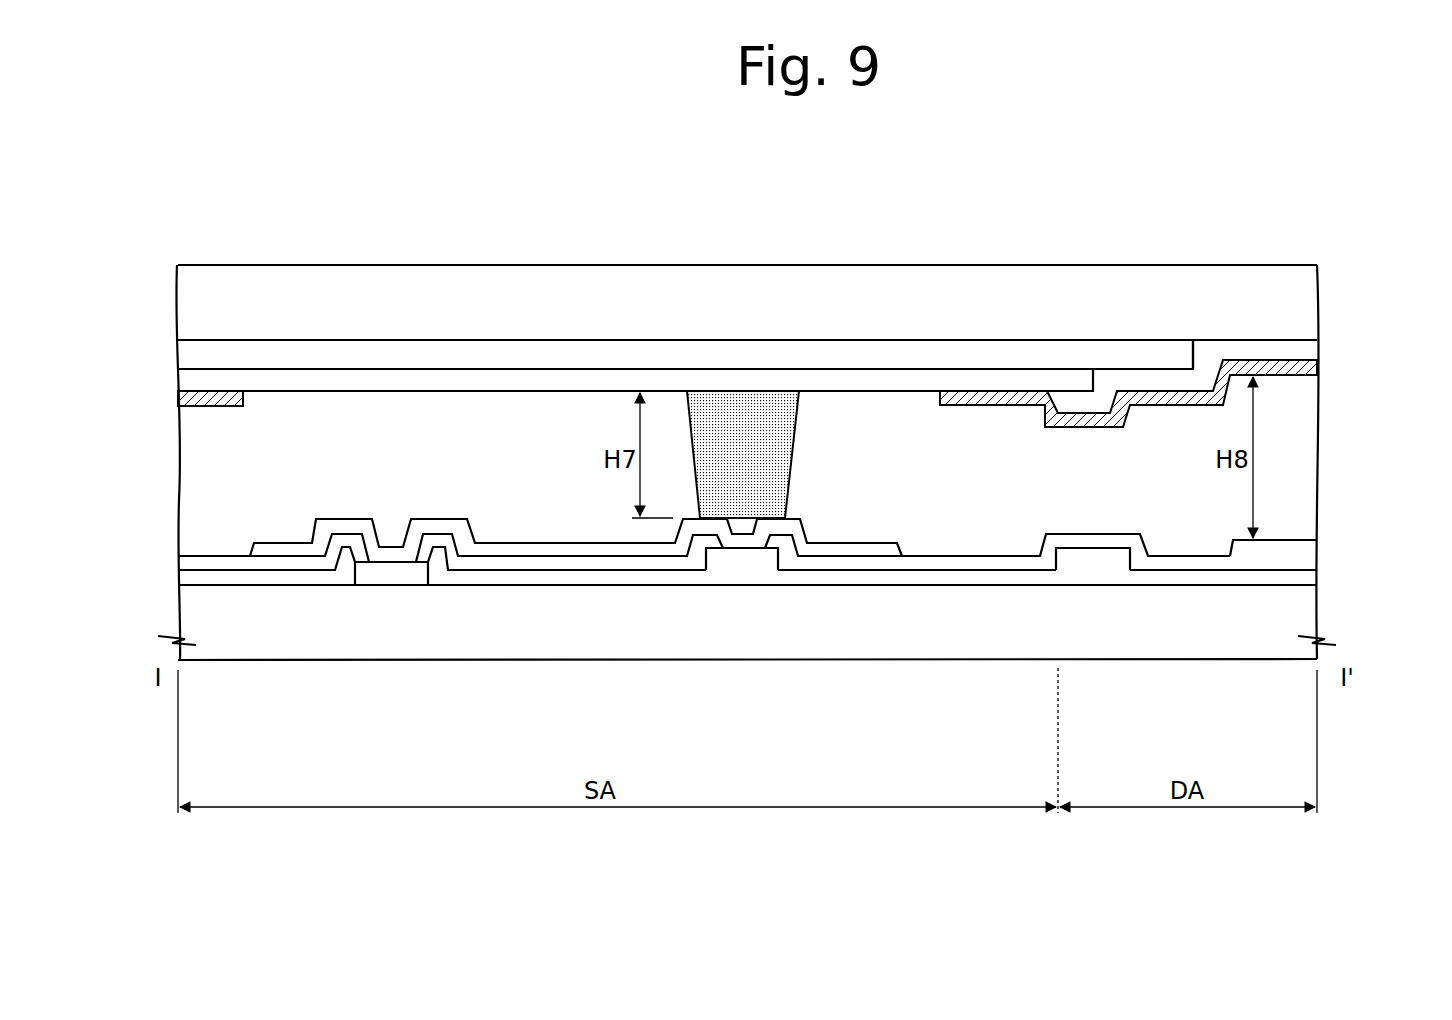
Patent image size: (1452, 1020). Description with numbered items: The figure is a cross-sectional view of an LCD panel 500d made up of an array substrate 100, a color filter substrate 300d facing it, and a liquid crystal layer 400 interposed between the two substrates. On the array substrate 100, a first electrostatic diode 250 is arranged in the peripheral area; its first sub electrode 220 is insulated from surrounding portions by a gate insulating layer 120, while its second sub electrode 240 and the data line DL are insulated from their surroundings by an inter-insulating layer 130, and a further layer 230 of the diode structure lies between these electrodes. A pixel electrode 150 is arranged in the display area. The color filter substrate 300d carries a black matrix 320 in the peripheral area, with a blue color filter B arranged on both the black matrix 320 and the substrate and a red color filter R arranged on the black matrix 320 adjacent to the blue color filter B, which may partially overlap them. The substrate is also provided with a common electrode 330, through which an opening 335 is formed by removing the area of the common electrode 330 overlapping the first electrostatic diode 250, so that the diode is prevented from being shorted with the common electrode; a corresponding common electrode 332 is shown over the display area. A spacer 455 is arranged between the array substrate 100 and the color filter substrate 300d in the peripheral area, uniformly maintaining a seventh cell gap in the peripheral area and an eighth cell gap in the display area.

The array substrate 100 is at (1312, 608).
The gate insulating layer 120 is at (1312, 573).
The inter-insulating layer 130 is at (1312, 554).
The pixel electrode 150 is at (1312, 538).
The first sub electrode 220 is at (389, 577).
The active layer 230 is at (540, 550).
The second sub electrode 240 is at (744, 563).
The first electrostatic diode 250 is at (767, 726).
The color filter substrate 300d is at (1310, 303).
The black matrix 320 is at (700, 348).
The common electrode 330 is at (188, 395).
The common electrode 332 is at (1303, 368).
The opening 335 is at (517, 402).
The liquid crystal layer 400 is at (192, 470).
The spacer 455 is at (780, 452).
The LCD panel 500d is at (1182, 158).
The red color filter R is at (998, 375).
The blue color filter B is at (1222, 347).
The data line DL is at (1094, 565).